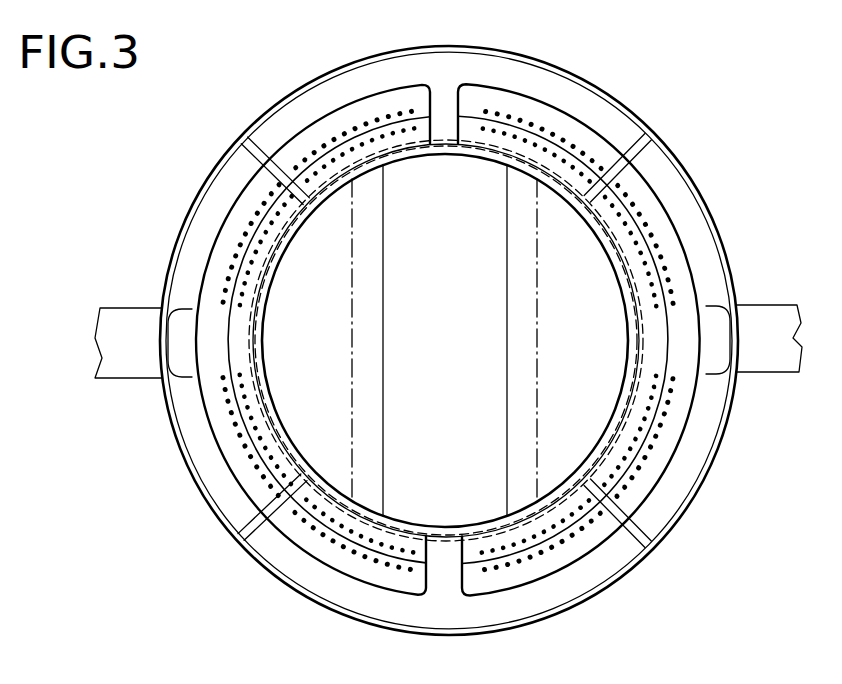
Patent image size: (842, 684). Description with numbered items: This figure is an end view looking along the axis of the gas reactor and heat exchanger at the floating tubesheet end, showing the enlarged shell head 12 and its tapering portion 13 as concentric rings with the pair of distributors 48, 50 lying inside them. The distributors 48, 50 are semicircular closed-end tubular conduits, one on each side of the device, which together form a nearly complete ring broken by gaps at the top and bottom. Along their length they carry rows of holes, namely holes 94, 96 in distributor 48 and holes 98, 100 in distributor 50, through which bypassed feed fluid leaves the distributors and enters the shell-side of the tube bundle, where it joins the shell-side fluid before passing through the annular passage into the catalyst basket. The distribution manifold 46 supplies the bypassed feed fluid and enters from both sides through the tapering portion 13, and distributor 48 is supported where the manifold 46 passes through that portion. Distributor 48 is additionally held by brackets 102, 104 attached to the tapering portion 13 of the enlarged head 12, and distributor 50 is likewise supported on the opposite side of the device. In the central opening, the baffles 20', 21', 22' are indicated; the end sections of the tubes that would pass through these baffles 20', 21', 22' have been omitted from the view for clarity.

The enlarged shell head 12 is at (565, 610).
The tapering portion 13 is at (200, 432).
The baffle 20' is at (445, 281).
The baffle 21' is at (370, 262).
The baffle 22' is at (516, 262).
The distribution manifold 46 is at (140, 380).
The distributor 48 is at (228, 480).
The distributor 50 is at (668, 468).
The holes 94 is at (313, 513).
The holes 96 is at (300, 523).
The holes 98 is at (625, 193).
The holes 100 is at (628, 212).
The bracket 102 is at (245, 533).
The bracket 104 is at (255, 162).